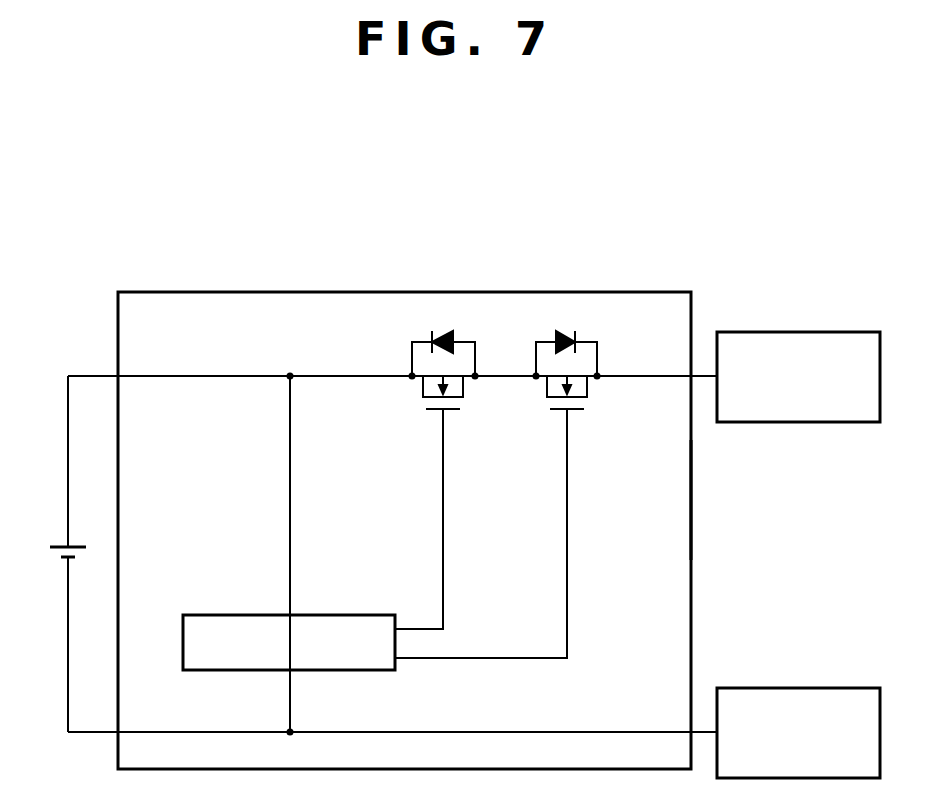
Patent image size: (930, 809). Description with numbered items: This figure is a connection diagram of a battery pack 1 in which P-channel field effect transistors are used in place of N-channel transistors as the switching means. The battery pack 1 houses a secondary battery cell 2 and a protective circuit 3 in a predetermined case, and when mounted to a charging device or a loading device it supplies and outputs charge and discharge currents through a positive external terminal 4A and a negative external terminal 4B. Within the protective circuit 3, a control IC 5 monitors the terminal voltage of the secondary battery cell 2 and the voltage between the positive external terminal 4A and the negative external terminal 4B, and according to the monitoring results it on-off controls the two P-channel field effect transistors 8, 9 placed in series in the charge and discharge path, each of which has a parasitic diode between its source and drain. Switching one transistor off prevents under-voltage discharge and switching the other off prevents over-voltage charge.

The battery pack 1 is at (615, 265).
The secondary battery cell 2 is at (52, 545).
The protective circuit 3 is at (693, 495).
The positive external terminal 4A is at (798, 332).
The negative external terminal 4B is at (797, 688).
The control IC 5 is at (235, 614).
The P-channel field effect transistor 8 is at (423, 380).
The P-channel field effect transistor 9 is at (590, 392).